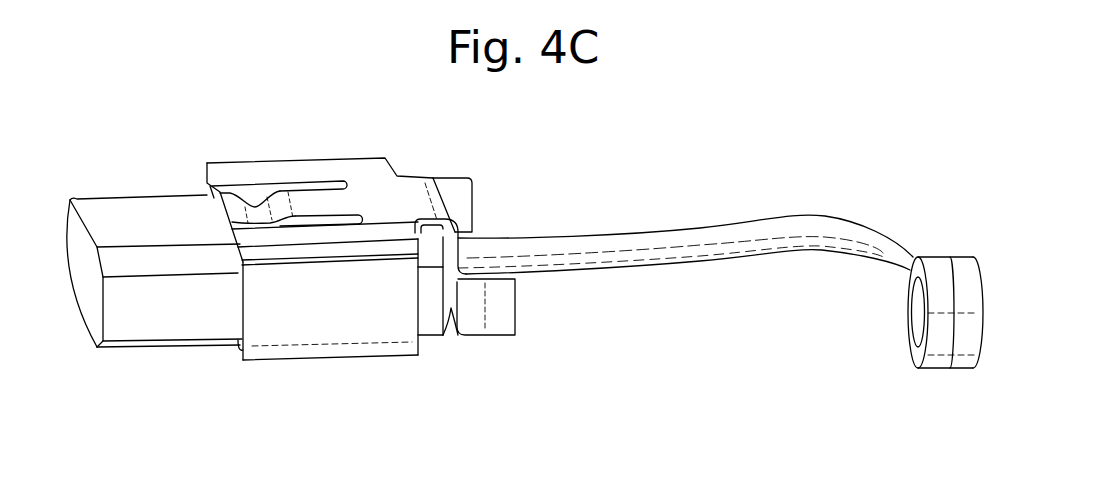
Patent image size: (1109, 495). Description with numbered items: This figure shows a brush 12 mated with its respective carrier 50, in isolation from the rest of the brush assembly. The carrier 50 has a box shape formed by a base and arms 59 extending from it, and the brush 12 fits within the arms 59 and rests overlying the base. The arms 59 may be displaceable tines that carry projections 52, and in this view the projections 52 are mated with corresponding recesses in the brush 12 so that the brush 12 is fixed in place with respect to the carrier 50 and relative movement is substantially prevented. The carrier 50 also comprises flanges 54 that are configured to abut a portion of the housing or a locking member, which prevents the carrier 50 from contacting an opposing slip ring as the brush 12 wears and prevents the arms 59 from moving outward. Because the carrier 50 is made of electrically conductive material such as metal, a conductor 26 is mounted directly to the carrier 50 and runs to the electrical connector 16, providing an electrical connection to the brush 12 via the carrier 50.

The brush 12 is at (138, 313).
The carrier 50 is at (362, 167).
The projection 52 is at (250, 183).
The arm 59 is at (300, 183).
The flange 54 is at (460, 177).
The conductor 26 is at (718, 237).
The electrical connector 16 is at (963, 265).